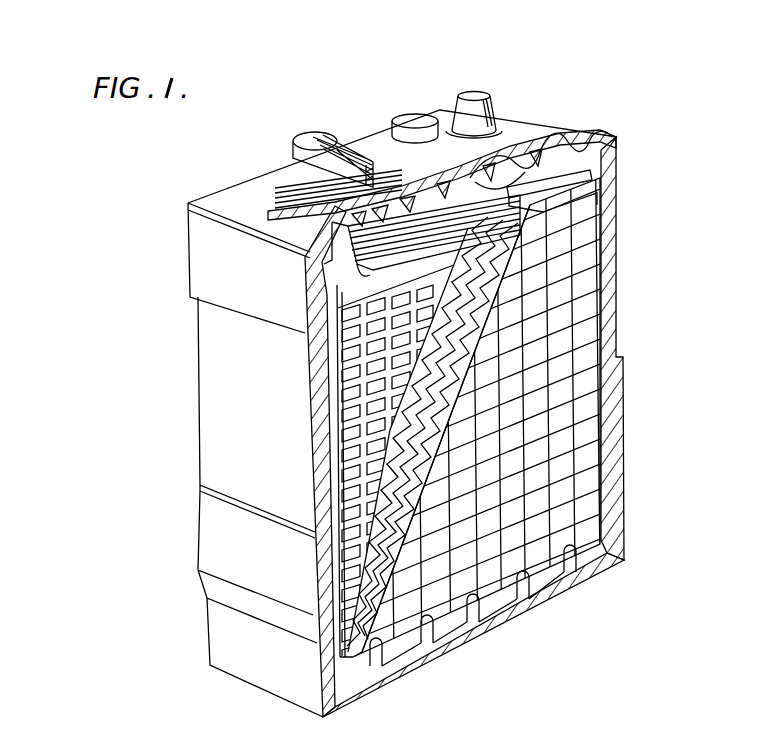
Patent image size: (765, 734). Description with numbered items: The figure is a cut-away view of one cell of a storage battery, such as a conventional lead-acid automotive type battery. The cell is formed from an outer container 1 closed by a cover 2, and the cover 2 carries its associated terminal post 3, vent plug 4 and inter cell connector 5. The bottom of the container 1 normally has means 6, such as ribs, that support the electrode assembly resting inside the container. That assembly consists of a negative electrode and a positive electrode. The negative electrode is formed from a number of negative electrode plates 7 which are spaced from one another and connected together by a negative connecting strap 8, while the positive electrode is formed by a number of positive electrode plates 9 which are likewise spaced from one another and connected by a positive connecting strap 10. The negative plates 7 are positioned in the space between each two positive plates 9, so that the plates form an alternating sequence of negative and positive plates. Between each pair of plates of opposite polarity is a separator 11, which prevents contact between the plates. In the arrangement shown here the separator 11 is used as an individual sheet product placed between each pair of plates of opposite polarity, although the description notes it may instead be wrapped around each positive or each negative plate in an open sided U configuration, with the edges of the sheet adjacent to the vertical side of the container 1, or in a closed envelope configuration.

The outer container 1 is at (247, 632).
The cover 2 is at (242, 210).
The terminal post 3 is at (480, 94).
The vent plug 4 is at (407, 122).
The inter cell connector 5 is at (310, 156).
The means to support electrode assembly 6 is at (487, 597).
The negative electrode plates 7 is at (563, 492).
The negative connecting strap 8 is at (562, 140).
The positive electrode plates 9 is at (357, 444).
The positive connecting strap 10 is at (327, 263).
The separator 11 is at (380, 528).